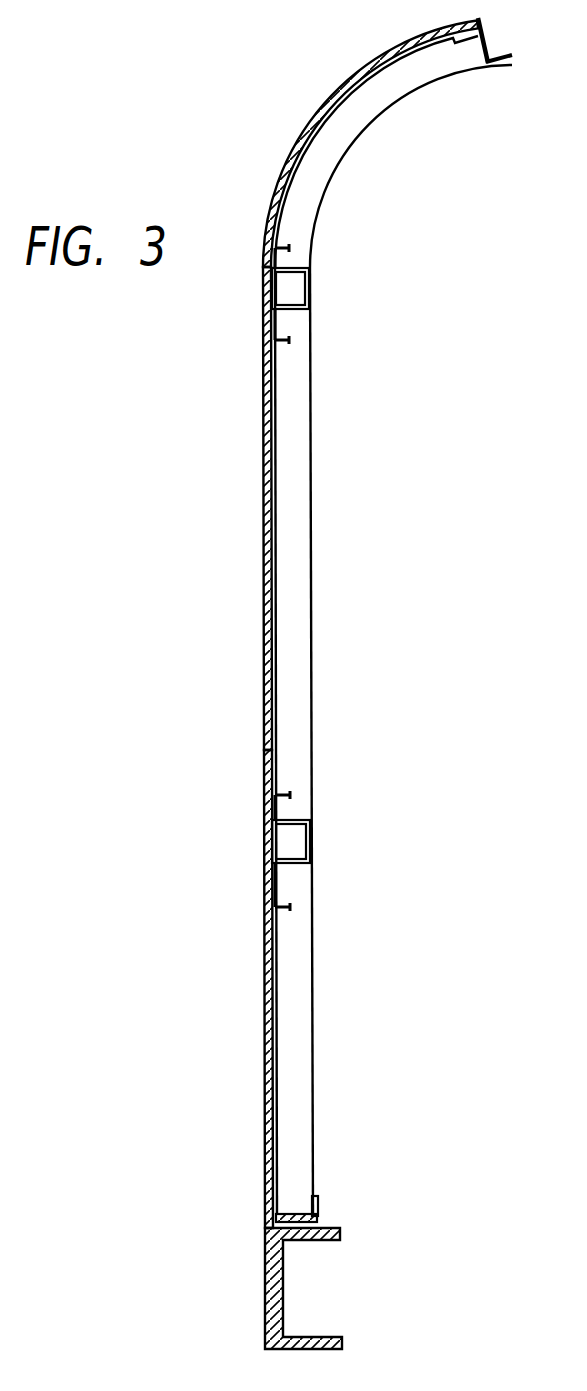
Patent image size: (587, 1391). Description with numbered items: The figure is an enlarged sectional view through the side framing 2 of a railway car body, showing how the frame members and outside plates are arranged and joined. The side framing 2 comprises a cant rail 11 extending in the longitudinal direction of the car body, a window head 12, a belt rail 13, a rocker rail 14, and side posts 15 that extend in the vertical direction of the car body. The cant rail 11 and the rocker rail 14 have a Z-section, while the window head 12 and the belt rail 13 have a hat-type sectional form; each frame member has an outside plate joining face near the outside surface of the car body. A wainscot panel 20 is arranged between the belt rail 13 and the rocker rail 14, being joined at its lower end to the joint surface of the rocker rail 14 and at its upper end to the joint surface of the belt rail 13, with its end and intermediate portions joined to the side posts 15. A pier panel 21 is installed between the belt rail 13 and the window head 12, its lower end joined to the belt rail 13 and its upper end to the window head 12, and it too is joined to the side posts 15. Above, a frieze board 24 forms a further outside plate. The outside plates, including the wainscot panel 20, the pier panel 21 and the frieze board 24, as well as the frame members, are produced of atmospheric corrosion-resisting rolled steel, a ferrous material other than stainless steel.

The side framing 2 is at (199, 551).
The cant rail 11 is at (490, 64).
The window head 12 is at (310, 272).
The belt rail 13 is at (310, 830).
The rocker rail 14 is at (318, 1203).
The side post 15 is at (300, 638).
The wainscot panel 20 is at (264, 998).
The pier panel 21 is at (263, 586).
The frieze board 24 is at (318, 116).